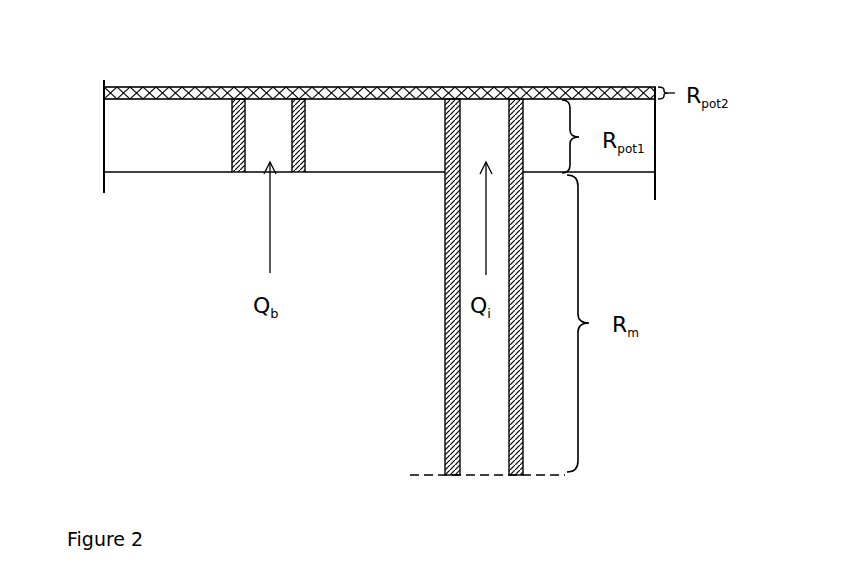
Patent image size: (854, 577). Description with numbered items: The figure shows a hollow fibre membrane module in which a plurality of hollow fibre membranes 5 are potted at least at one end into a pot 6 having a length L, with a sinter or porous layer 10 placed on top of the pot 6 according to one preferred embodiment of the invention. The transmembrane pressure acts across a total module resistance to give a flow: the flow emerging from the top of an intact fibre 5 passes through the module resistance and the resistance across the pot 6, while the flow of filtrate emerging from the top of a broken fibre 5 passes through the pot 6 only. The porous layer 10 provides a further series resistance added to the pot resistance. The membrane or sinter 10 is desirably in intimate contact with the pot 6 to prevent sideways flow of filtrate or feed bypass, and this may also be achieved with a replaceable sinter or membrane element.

The hollow fibre membranes 5 is at (305, 145).
The pot 6 is at (355, 137).
The sinter or porous layer 10 is at (433, 86).